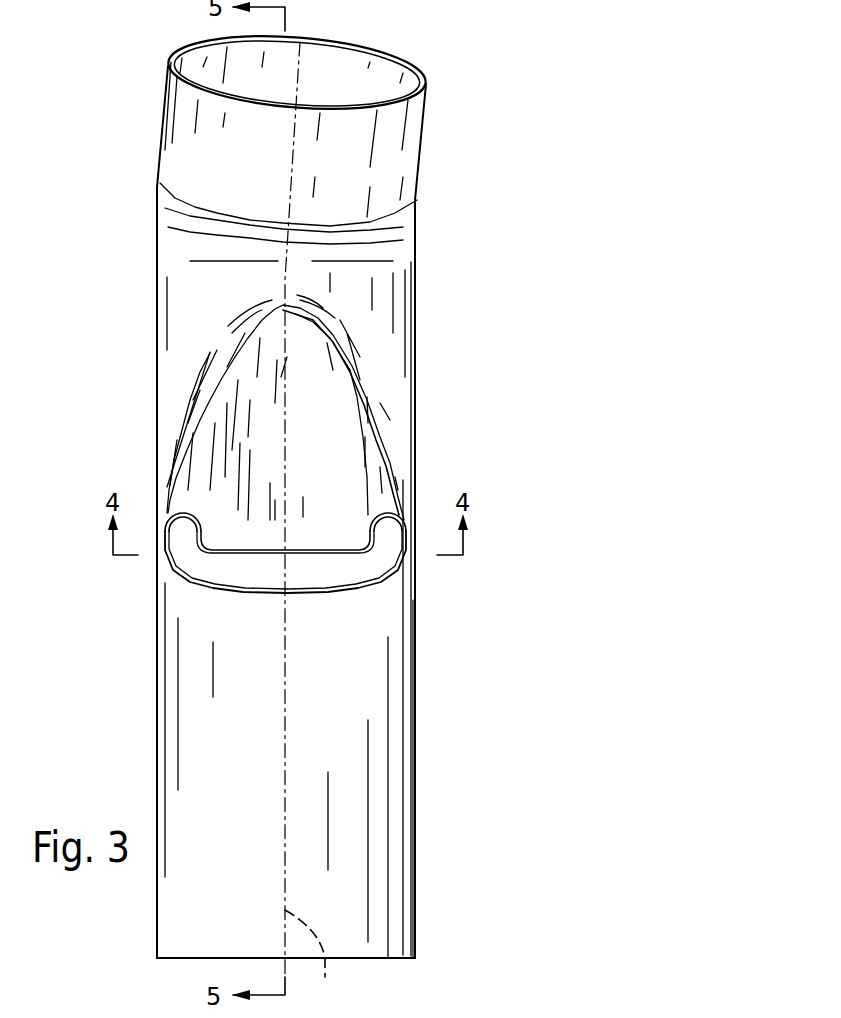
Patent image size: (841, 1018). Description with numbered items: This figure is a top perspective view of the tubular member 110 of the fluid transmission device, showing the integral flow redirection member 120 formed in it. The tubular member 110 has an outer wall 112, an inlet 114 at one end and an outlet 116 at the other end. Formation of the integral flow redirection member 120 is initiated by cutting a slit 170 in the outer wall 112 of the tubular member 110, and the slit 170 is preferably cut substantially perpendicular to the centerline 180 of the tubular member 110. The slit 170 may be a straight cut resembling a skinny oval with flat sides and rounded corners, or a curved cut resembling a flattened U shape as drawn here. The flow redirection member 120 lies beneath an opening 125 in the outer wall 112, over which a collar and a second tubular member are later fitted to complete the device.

The tubular member 110 is at (415, 324).
The outer wall 112 is at (417, 765).
The inlet 114 is at (377, 958).
The outlet 116 is at (370, 50).
The flow redirection member 120 is at (327, 468).
The opening 125 is at (247, 372).
The slit 170 is at (370, 562).
The centerline 180 is at (317, 959).